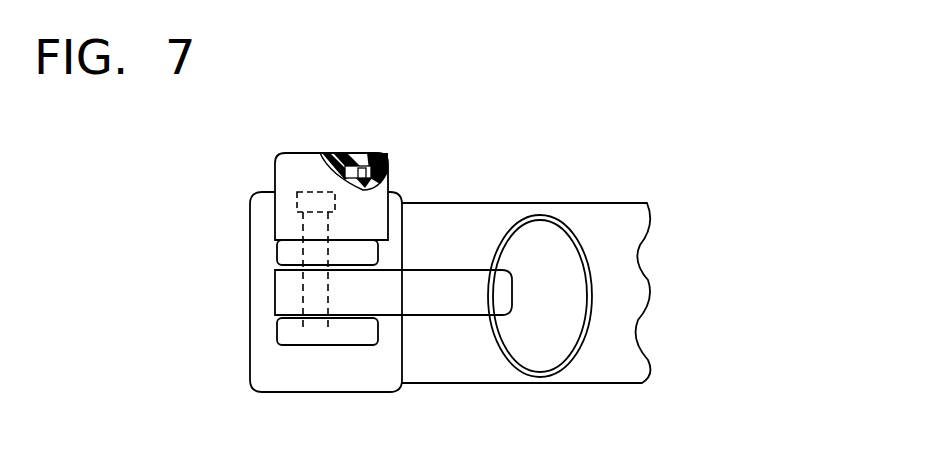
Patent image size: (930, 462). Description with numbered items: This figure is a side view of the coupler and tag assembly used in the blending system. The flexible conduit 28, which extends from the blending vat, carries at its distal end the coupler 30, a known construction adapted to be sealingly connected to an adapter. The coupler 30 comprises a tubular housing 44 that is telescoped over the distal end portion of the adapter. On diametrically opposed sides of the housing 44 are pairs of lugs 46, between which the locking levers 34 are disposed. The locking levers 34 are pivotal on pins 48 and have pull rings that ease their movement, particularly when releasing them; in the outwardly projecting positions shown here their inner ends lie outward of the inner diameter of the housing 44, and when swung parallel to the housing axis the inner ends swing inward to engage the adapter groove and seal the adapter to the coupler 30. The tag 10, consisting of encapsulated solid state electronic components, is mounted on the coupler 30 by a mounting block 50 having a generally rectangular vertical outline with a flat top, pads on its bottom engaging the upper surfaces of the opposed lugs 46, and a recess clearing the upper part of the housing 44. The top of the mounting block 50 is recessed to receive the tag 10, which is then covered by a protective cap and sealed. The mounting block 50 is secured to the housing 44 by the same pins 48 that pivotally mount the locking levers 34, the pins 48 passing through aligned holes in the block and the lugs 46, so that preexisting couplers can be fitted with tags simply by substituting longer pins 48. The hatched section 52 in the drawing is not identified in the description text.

The tag 10 is at (340, 175).
The flexible conduit 28 is at (435, 383).
The coupler 30 is at (362, 269).
The locking lever 34 is at (423, 297).
The tubular housing 44 is at (292, 397).
The lugs 46 is at (285, 255).
The pin 48 is at (330, 332).
The mounting block 50 is at (367, 171).
The seal 52 is at (346, 154).